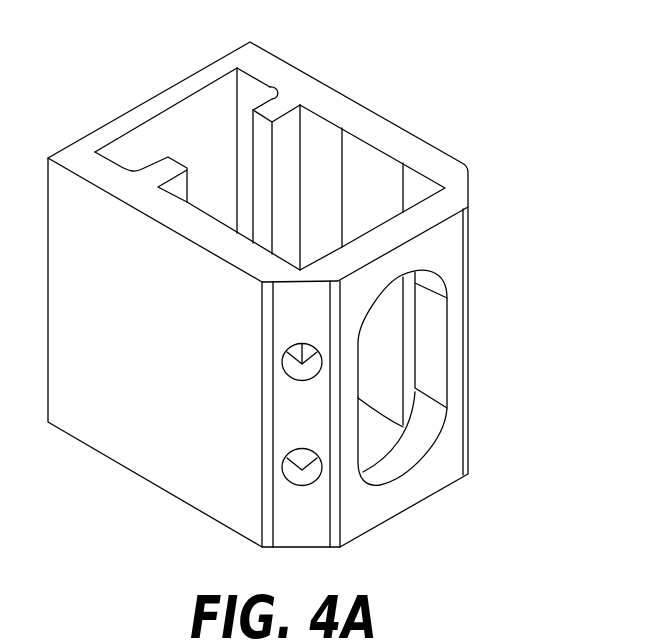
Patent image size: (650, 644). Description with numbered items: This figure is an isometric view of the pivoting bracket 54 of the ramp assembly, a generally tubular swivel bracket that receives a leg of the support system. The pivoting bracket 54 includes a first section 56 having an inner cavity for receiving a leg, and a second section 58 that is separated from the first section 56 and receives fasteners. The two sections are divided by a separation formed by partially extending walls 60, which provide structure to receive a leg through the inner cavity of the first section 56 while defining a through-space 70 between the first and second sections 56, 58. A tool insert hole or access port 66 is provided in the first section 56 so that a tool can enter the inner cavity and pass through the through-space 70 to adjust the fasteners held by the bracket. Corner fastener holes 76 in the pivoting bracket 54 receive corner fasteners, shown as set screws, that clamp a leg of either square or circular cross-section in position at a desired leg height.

The pivoting bracket 54 is at (405, 58).
The first section 56 is at (380, 178).
The second section 58 is at (147, 158).
The partially extending walls 60 is at (256, 142).
The tool insert hole or access port 66 is at (430, 361).
The through-space 70 is at (188, 183).
The corner fastener holes 76 is at (286, 370).